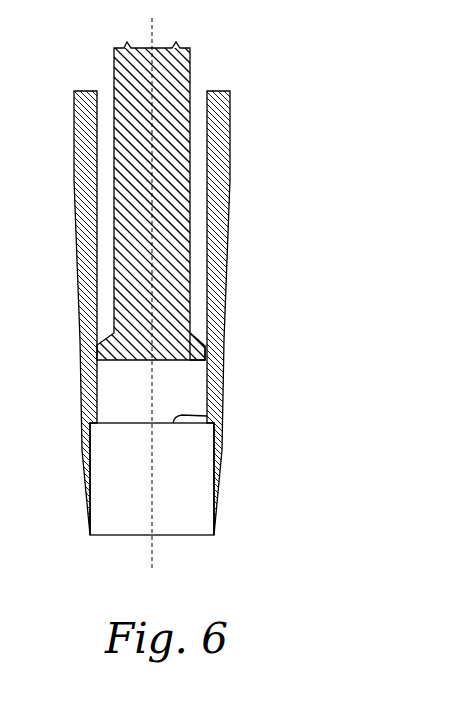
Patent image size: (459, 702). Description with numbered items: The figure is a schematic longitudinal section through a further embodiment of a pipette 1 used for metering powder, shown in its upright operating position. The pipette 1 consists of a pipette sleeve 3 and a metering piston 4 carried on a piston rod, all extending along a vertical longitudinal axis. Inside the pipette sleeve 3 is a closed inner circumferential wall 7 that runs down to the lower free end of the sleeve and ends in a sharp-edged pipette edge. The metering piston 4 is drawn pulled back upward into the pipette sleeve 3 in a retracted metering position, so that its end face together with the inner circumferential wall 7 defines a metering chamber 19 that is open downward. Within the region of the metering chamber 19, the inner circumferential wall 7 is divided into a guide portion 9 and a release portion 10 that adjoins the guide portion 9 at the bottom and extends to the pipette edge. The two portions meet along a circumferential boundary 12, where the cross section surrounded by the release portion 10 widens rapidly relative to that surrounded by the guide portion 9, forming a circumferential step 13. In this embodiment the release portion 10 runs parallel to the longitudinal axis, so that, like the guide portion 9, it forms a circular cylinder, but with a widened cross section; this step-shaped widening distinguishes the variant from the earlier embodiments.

The pipette 1 is at (242, 150).
The pipette sleeve 3 is at (74, 172).
The metering piston 4 is at (192, 350).
The inner circumferential wall 7 is at (120, 410).
The guide portion 9 is at (104, 383).
The release portion 10 is at (95, 510).
The boundary 12 is at (207, 416).
The circumferential step 13 is at (205, 427).
The metering chamber 19 is at (141, 473).